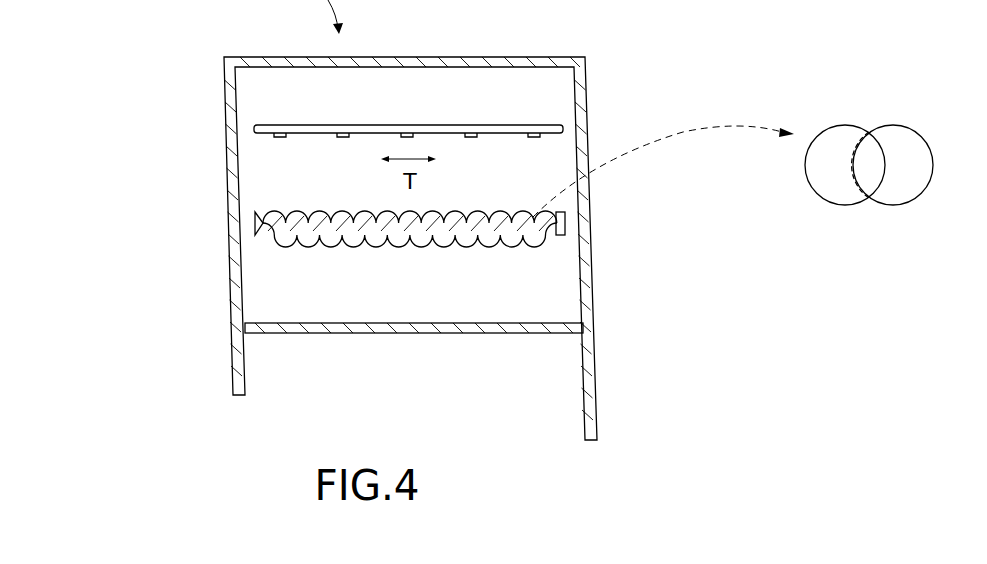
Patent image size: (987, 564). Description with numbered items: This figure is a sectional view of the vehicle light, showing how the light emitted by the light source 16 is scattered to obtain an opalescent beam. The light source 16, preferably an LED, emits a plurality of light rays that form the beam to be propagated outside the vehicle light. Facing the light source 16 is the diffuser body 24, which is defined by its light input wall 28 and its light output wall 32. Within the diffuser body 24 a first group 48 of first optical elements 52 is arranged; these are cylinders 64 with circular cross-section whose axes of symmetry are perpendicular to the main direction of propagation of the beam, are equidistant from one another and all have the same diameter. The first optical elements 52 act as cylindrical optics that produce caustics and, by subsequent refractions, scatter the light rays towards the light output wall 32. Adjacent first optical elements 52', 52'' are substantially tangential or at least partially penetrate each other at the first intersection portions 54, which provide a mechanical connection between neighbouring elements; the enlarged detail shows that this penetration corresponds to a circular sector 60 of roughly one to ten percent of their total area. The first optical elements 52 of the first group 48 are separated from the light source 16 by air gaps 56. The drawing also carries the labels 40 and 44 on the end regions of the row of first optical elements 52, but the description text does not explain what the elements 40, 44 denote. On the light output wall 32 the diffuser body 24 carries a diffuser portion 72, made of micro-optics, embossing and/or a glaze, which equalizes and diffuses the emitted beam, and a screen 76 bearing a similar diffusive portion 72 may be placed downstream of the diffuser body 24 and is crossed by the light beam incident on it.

The light source 16 is at (534, 130).
The diffuser body 24 is at (567, 222).
The light input wall 28 is at (287, 205).
The light output wall 32 is at (306, 243).
The second wire 40 is at (254, 228).
The end fitting 44 is at (572, 215).
The first group 48 is at (521, 196).
The first optical elements 52 is at (615, 311).
The first adjacent optical element 52' is at (832, 127).
The first adjacent optical element 52'' is at (909, 134).
The first intersection portions 54 is at (441, 237).
The air gaps 56 is at (324, 177).
The circular sector 60 is at (870, 168).
The cylinders 64 is at (256, 221).
The diffuser portion 72 is at (410, 338).
The screen 76 is at (287, 333).